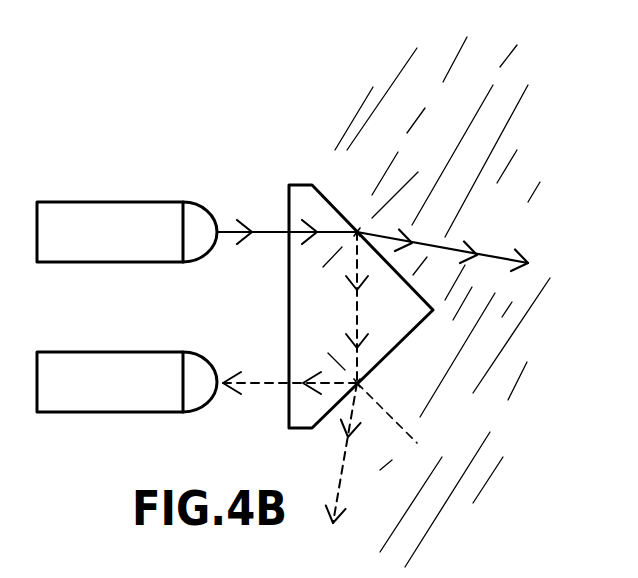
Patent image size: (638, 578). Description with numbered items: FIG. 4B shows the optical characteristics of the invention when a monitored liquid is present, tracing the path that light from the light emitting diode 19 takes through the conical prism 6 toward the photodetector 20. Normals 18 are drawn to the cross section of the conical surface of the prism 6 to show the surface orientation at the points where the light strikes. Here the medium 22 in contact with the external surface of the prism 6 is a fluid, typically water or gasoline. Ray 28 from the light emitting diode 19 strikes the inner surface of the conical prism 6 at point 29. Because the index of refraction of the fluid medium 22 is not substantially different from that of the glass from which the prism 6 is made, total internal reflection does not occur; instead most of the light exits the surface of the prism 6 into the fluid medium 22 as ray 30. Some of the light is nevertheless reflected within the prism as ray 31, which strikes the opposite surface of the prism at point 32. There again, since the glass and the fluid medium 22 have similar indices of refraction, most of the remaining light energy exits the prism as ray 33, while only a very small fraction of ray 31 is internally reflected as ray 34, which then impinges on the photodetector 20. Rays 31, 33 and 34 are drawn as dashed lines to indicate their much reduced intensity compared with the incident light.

The conical prism 6 is at (399, 325).
The normals 18 is at (418, 172).
The light emitting diode 19 is at (112, 220).
The photodetector 20 is at (112, 398).
The fluid medium 22 is at (532, 219).
The ray 28 is at (285, 232).
The point of incidence 29 is at (357, 232).
The ray 30 is at (478, 256).
The ray 31 is at (359, 331).
The point of incidence 32 is at (358, 382).
The ray 33 is at (346, 460).
The ray 34 is at (280, 383).